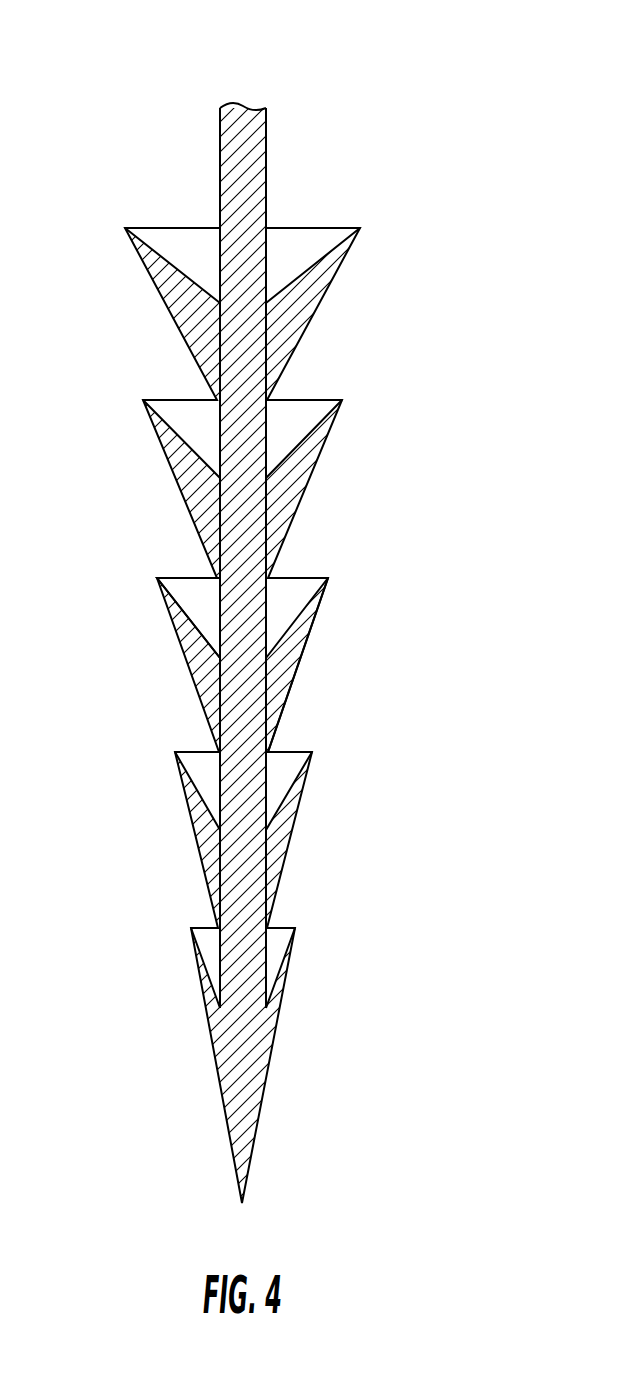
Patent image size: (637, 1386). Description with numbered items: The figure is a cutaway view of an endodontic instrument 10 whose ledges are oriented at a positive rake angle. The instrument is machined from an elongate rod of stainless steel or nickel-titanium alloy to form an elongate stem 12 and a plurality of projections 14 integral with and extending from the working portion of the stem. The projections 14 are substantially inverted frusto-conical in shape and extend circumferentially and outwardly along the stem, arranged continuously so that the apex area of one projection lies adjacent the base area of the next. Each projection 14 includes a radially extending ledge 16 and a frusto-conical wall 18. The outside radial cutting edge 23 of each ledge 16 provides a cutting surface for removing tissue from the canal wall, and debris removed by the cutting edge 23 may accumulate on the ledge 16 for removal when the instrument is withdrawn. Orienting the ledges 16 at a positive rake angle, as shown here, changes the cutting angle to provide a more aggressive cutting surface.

The endodontic instrument 10 is at (318, 613).
The elongate stem 12 is at (253, 178).
The projections 14 is at (293, 477).
The ledge 16 is at (180, 590).
The frusto-conical wall 18 is at (285, 667).
The outside radial cutting edge 23 is at (293, 927).